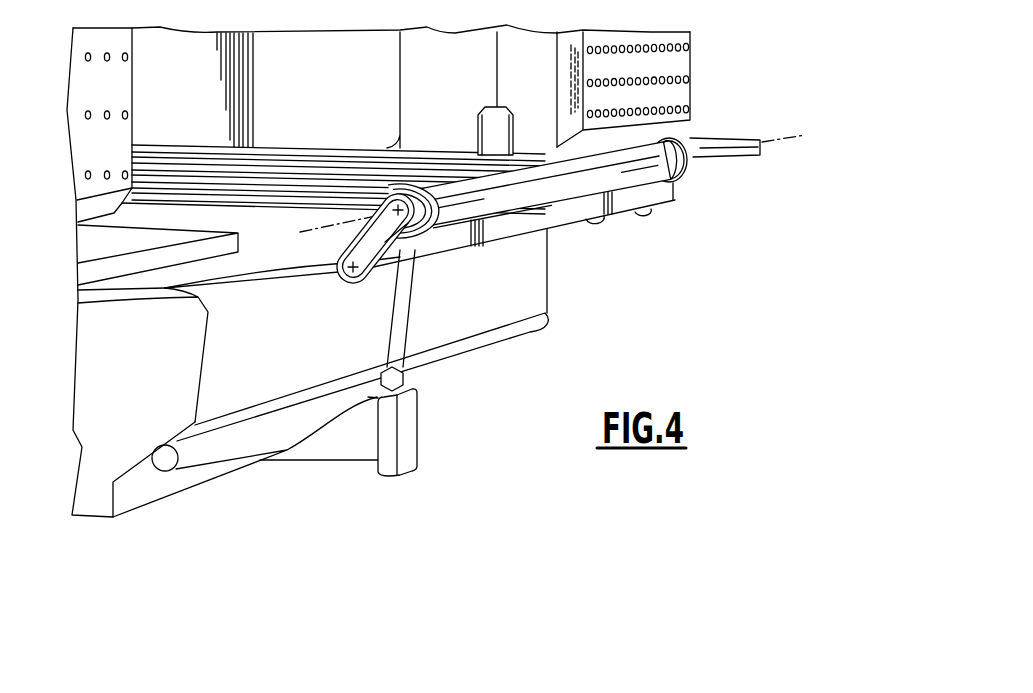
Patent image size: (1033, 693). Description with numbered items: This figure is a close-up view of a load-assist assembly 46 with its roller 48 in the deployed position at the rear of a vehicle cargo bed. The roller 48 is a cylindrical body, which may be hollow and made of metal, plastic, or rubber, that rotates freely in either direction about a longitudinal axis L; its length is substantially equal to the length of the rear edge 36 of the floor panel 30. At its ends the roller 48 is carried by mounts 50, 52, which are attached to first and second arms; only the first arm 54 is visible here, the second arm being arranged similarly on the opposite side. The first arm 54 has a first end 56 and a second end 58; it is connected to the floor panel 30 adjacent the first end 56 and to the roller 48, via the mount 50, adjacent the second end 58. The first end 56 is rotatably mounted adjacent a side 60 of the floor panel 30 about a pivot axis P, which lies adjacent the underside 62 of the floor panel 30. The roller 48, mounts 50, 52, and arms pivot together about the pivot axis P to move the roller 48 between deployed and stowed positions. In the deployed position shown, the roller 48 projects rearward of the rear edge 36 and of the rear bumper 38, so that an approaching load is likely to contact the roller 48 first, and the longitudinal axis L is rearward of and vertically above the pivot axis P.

The floor panel 30 is at (434, 142).
The rear edge 36 is at (563, 222).
The rear bumper 38 is at (253, 383).
The assembly 46 is at (669, 138).
The roller 48 is at (643, 177).
The mount 50 is at (448, 212).
The mount 52 is at (687, 168).
The first arm 54 is at (386, 240).
The first end 56 is at (343, 253).
The second end 58 is at (389, 184).
The side 60 is at (283, 247).
The underside 62 is at (318, 265).
The longitudinal axis L is at (432, 240).
The pivot axis P is at (407, 215).